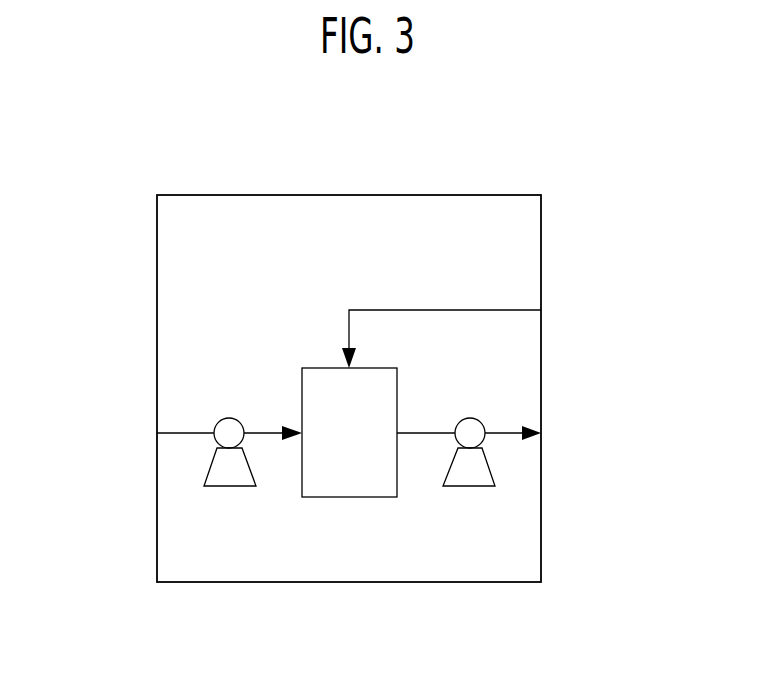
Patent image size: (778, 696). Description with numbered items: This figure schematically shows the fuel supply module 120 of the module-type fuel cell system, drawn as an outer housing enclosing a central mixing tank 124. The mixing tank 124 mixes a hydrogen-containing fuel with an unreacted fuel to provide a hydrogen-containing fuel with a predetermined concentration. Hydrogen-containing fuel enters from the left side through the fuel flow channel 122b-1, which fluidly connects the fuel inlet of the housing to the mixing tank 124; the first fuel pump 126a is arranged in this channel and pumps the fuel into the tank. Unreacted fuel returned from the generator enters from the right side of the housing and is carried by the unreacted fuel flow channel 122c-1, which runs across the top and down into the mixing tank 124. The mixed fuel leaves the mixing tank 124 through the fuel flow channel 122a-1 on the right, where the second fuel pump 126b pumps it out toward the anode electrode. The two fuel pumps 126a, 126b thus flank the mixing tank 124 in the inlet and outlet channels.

The fuel supply module 120 is at (280, 175).
The fuel flow channel 122a-1 is at (497, 431).
The fuel flow channel 122b-1 is at (185, 433).
The unreacted fuel flow channel 122c-1 is at (483, 310).
The mixing tank 124 is at (349, 497).
The first fuel pump 126a is at (228, 486).
The second fuel pump 126b is at (467, 486).